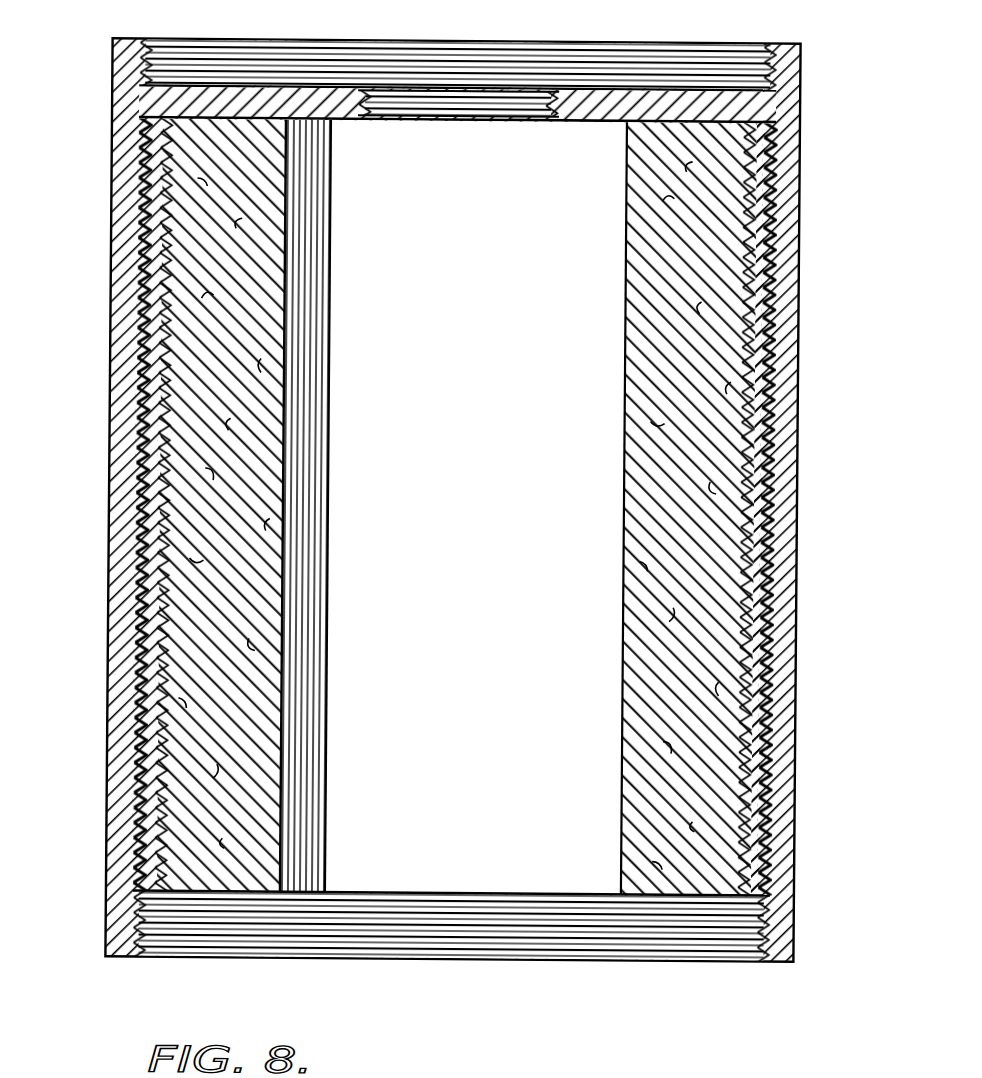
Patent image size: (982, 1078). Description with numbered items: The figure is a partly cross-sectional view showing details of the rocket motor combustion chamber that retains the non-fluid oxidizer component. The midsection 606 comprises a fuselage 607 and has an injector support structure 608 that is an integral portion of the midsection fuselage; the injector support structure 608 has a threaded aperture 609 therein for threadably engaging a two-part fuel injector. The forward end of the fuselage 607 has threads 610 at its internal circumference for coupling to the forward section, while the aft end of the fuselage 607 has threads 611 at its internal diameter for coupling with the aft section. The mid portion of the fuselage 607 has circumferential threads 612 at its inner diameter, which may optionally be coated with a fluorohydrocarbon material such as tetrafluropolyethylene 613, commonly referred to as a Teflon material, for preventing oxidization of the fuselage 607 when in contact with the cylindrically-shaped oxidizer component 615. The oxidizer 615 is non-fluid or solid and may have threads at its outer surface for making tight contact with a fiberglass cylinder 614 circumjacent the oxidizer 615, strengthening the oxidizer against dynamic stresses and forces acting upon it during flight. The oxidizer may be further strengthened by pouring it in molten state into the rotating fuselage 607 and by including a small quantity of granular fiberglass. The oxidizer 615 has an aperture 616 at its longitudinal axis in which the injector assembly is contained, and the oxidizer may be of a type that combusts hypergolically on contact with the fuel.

The midsection 606 is at (106, 879).
The fuselage 607 is at (122, 808).
The injector support structure 608 is at (556, 119).
The threaded aperture 609 is at (371, 121).
The threads 610 is at (757, 45).
The threads 611 is at (756, 956).
The circumferential threads 612 is at (768, 304).
The tetrafluropolyethylene 613 is at (766, 229).
The fiberglass cylinder 614 is at (772, 179).
The oxidizer component 615 is at (640, 504).
The aperture 616 is at (453, 507).